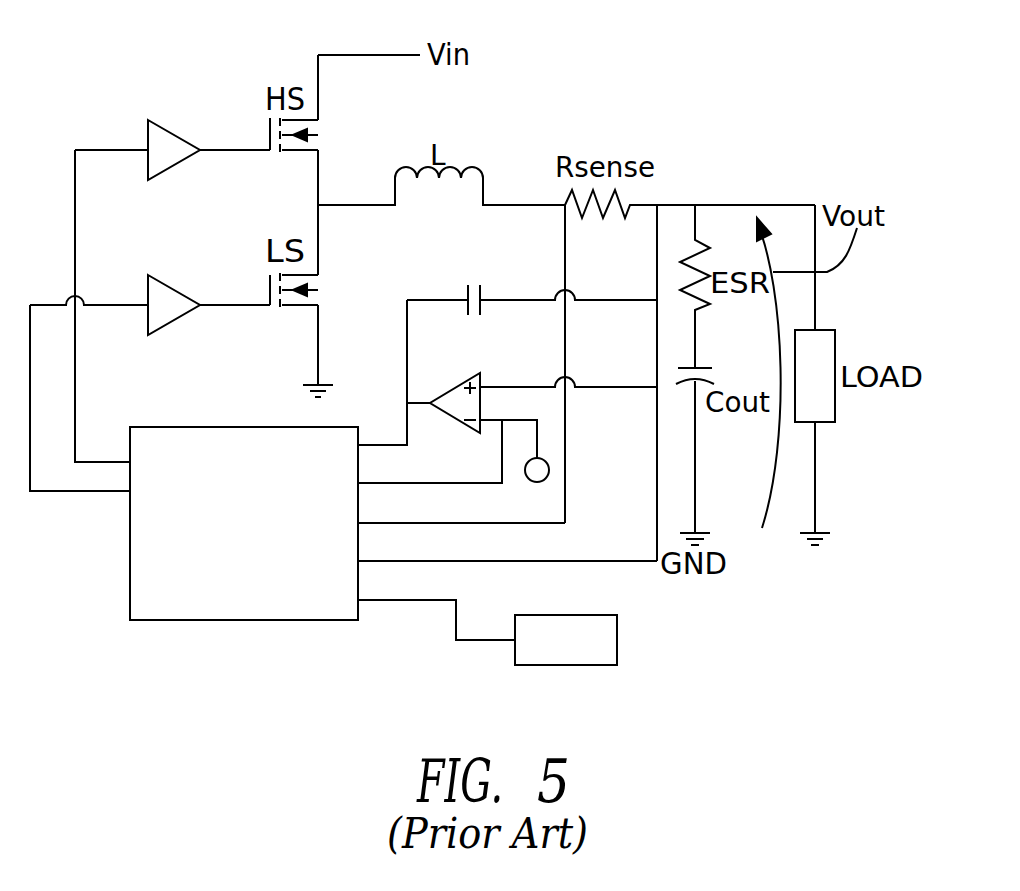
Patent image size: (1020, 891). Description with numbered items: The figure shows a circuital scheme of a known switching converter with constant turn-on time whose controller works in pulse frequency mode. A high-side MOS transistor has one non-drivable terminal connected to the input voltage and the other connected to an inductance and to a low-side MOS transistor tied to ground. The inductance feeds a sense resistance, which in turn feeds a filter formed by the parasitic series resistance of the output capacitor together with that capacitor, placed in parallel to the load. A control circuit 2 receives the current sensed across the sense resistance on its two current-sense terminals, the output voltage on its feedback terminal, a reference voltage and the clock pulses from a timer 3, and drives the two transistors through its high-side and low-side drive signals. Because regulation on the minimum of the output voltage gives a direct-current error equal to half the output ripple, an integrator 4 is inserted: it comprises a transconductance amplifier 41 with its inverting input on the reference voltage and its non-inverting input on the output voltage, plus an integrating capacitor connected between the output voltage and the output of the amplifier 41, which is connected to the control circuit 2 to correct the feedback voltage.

The control circuit 2 is at (88, 596).
The timer 3 is at (580, 656).
The integrator 4 is at (436, 286).
The transconductance amplifier 41 is at (485, 375).